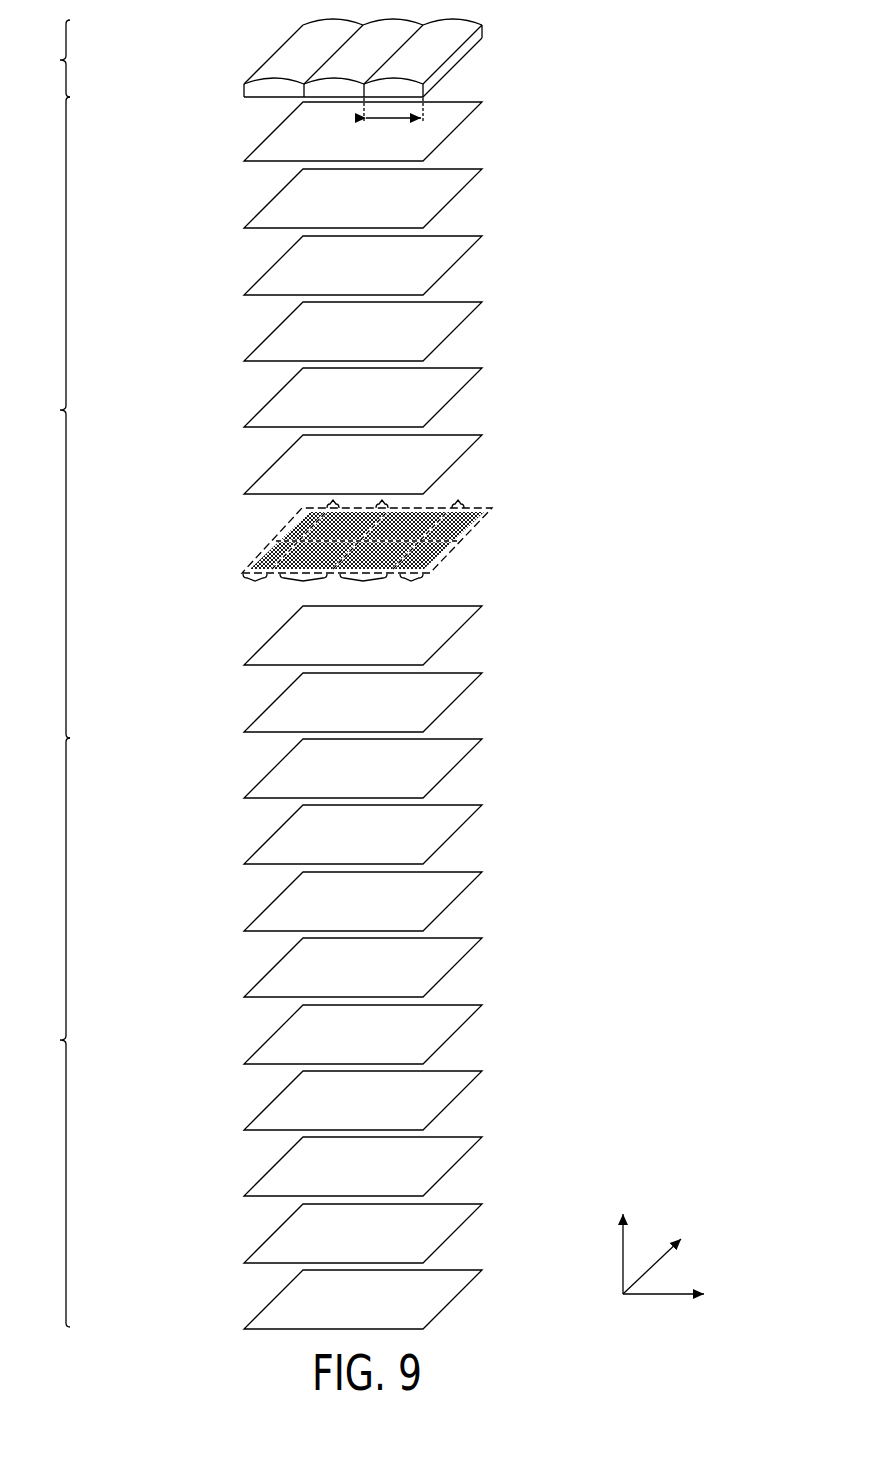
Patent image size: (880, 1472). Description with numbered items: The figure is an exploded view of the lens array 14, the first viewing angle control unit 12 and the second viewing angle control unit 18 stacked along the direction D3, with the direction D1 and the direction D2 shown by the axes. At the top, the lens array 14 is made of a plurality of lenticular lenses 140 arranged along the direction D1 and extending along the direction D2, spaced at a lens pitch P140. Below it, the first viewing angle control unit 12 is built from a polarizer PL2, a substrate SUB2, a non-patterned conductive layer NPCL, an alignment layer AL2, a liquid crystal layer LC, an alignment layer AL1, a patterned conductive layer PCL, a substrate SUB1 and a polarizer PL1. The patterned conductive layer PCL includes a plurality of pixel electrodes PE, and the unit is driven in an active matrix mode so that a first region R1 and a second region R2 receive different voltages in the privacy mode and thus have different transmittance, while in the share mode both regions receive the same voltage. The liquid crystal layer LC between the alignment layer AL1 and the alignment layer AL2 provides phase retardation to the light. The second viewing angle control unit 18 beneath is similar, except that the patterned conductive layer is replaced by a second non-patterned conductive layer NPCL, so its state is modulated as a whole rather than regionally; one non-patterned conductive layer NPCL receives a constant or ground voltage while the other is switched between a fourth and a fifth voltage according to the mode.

The lens array 14 is at (50, 58).
The first viewing angle control unit 12 is at (50, 417).
The second viewing angle control unit 18 is at (50, 1032).
The lenticular lenses 140 is at (275, 72).
The lens pitch P140 is at (393, 126).
The polarizer PL2 is at (276, 150).
The substrate SUB2 is at (276, 217).
The non-patterned conductive layer NPCL is at (290, 276).
The alignment layer AL2 is at (276, 350).
The liquid crystal layer LC is at (276, 416).
The alignment layer AL1 is at (276, 483).
The patterned conductive layer PCL is at (326, 540).
The pixel electrodes PE is at (455, 541).
The first region R1 is at (382, 500).
The second region R2 is at (373, 590).
The substrate SUB1 is at (276, 654).
The polarizer PL1 is at (276, 721).
The direction D1 is at (684, 1293).
The direction D2 is at (669, 1251).
The direction D3 is at (626, 1234).